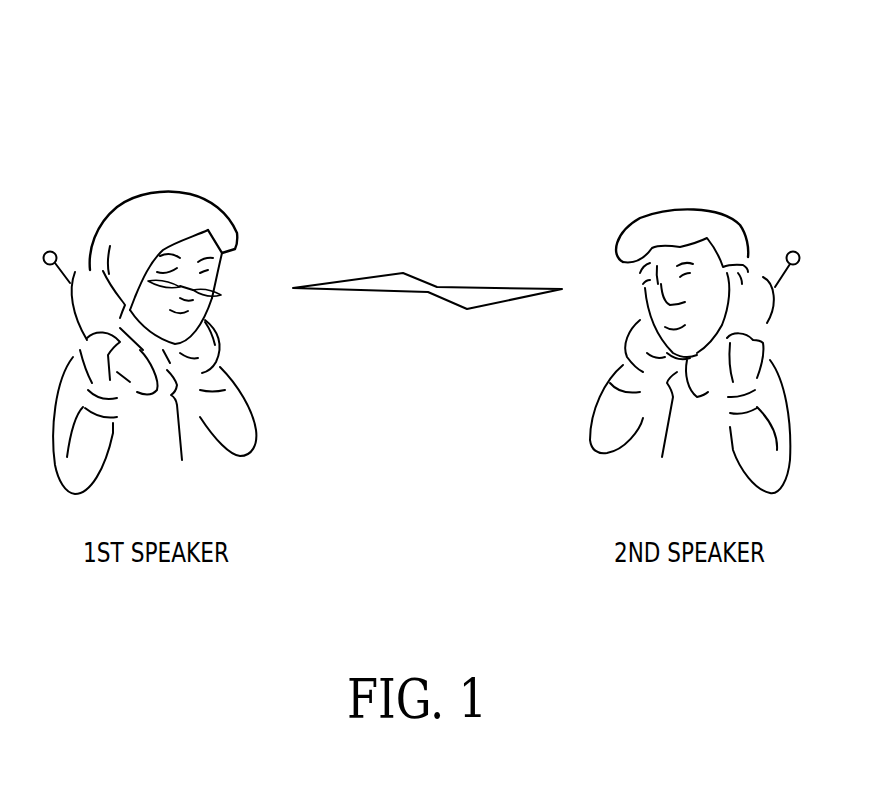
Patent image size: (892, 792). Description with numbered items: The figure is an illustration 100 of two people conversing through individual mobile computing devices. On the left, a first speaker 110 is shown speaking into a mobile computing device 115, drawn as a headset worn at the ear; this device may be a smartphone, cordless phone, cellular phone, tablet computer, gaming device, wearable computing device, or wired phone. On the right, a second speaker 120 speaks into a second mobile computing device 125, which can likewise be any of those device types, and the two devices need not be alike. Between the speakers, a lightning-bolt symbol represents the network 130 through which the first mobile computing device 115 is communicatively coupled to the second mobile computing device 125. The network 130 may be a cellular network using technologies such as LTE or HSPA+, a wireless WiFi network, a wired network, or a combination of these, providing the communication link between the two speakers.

The illustration 100 is at (88, 65).
The first speaker 110 is at (163, 190).
The mobile computing device 115 is at (68, 301).
The second speaker 120 is at (715, 208).
The second mobile computing device 125 is at (778, 299).
The network 130 is at (482, 280).